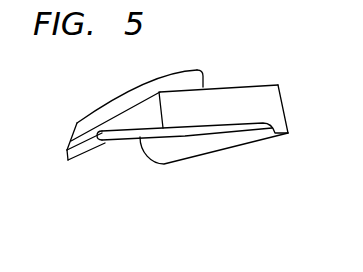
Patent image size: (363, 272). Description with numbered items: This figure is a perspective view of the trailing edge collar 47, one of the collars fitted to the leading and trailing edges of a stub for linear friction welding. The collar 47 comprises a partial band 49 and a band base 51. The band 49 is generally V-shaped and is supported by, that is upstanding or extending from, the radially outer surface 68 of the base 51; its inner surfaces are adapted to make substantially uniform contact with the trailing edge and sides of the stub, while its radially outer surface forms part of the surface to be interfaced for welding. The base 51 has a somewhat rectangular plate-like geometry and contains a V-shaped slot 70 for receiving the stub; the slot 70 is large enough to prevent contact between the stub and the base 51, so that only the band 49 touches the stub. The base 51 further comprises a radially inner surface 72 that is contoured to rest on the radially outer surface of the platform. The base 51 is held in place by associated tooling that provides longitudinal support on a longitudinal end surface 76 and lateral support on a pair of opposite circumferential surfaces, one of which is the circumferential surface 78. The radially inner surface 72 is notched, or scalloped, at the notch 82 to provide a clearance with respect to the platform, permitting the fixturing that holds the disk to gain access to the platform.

The trailing edge collar 47 is at (94, 91).
The circumferential surface 78 is at (138, 117).
The partial band 49 is at (203, 68).
The radially outer surface of base 68 is at (259, 84).
The band base 51 is at (281, 81).
The longitudinal end surface 76 is at (263, 106).
The radially inner surface 72 is at (88, 162).
The V-shaped slot 70 is at (122, 159).
The notch 82 is at (163, 128).